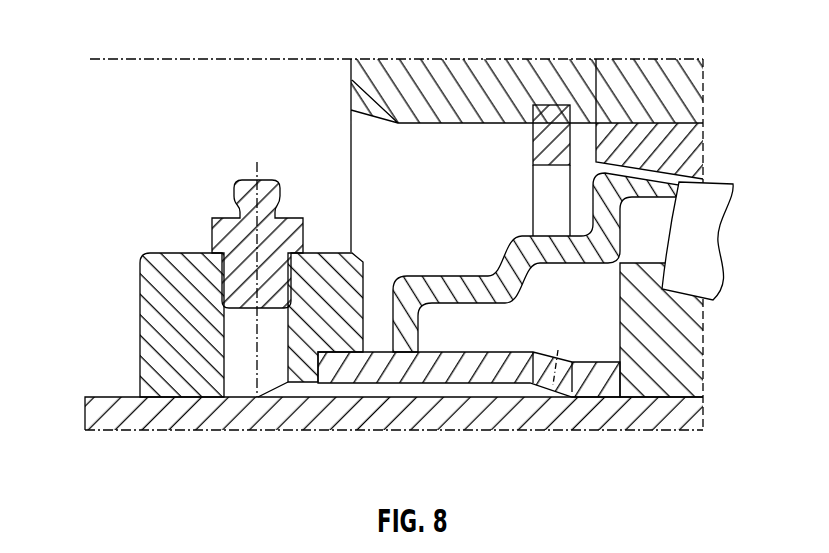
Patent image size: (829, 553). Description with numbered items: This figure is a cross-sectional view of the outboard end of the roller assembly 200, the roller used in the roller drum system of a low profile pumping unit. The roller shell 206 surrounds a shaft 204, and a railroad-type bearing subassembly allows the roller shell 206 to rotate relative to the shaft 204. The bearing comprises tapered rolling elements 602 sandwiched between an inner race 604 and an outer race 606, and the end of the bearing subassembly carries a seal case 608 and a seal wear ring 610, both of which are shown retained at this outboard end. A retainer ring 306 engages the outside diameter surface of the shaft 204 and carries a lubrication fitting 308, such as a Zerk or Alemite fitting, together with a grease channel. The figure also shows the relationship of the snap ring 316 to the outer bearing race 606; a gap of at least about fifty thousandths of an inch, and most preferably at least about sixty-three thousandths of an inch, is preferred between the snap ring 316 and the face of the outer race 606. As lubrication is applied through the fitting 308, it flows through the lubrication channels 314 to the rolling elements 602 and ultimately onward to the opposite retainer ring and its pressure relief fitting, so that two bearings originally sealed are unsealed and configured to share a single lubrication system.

The roller assembly 200 is at (197, 45).
The shaft 204 is at (102, 420).
The roller shell 206 is at (438, 64).
The retainer ring 306 is at (153, 322).
The lubrication fitting 308 is at (227, 237).
The lubrication channels 314 is at (237, 372).
The snap ring 316 is at (540, 150).
The rolling elements 602 is at (710, 257).
The inner race 604 is at (697, 337).
The outer race 606 is at (688, 157).
The seal case 608 is at (458, 282).
The seal wear ring 610 is at (455, 373).